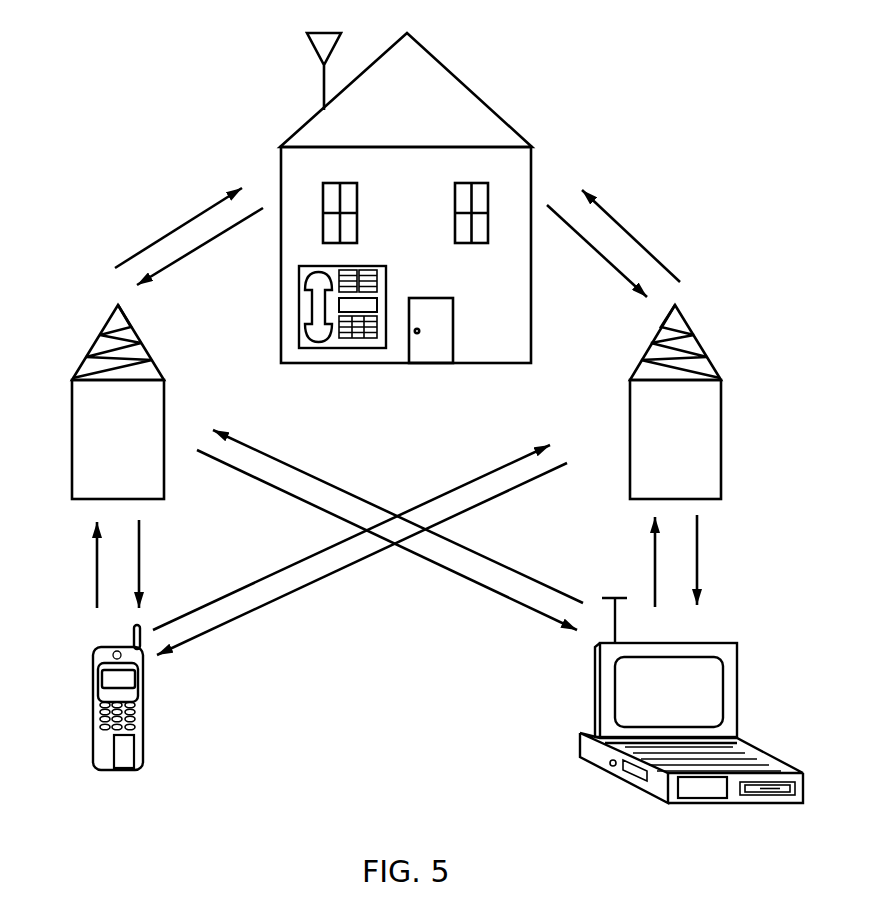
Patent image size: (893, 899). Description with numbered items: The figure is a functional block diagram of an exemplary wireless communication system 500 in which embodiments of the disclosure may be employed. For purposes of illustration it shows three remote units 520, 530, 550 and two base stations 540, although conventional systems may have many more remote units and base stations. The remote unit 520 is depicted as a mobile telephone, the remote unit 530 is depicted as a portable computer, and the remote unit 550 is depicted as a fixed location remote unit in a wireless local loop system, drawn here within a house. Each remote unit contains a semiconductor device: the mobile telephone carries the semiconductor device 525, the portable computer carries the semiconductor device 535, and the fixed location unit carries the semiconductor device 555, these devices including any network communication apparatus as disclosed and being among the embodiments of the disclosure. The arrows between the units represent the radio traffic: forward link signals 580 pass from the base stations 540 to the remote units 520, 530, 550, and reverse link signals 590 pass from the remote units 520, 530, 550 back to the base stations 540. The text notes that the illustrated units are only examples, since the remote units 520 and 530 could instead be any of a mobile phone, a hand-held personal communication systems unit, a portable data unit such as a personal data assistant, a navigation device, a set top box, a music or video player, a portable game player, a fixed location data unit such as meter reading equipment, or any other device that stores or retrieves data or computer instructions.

The wireless communication system 500 is at (137, 72).
The remote unit 520 is at (100, 655).
The semiconductor device 525 is at (127, 755).
The remote unit 530 is at (717, 643).
The semiconductor device 535 is at (708, 787).
The base station 540 is at (96, 340).
The remote unit 550 is at (297, 318).
The semiconductor device 555 is at (365, 305).
The forward link signals 580 is at (183, 222).
The reverse link signals 590 is at (187, 257).